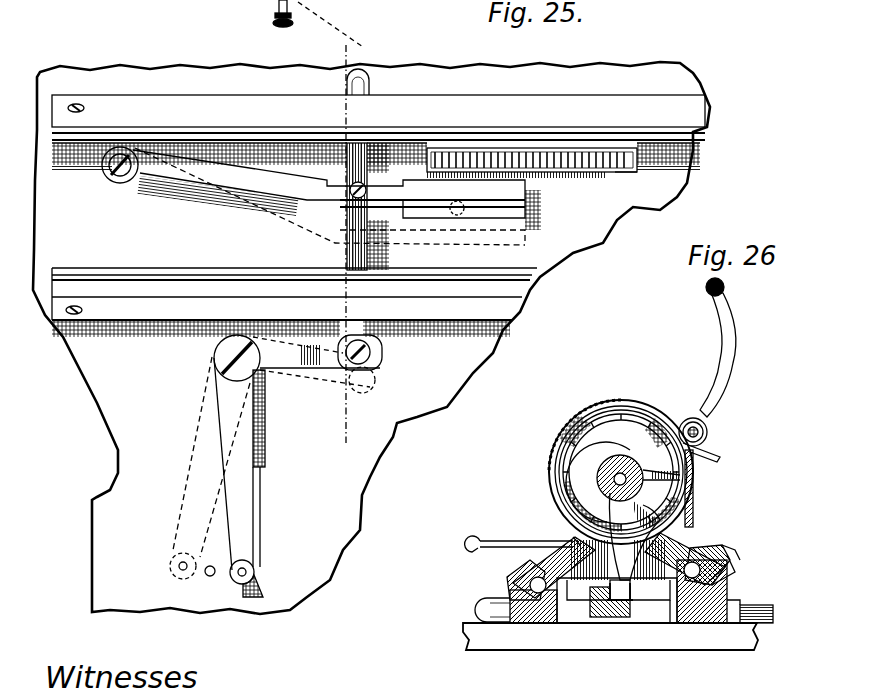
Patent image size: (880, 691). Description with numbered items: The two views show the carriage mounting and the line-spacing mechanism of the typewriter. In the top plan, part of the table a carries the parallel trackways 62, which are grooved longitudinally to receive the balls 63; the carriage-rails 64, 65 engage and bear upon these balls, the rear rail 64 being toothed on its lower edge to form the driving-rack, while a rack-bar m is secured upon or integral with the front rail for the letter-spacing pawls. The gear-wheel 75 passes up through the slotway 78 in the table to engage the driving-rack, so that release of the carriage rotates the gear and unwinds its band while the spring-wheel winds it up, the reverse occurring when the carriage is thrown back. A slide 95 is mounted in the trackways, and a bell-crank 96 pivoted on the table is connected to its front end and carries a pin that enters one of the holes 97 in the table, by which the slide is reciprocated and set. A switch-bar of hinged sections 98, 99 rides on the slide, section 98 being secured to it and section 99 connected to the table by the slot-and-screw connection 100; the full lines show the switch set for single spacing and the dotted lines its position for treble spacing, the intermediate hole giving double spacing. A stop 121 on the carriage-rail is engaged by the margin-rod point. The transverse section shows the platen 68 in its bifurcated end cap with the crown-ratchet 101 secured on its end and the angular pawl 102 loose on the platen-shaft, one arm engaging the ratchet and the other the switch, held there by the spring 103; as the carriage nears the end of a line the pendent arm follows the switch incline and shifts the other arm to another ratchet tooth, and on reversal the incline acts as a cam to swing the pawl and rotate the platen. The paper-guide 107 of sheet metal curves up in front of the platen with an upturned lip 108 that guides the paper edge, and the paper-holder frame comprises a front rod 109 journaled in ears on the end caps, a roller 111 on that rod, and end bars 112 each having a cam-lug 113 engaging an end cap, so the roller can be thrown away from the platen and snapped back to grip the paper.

In FIG. 25, the trackways 62 is at (378, 216).
In FIG. 26, the trackways 62 is at (618, 591).
In FIG. 25, the slide 95 is at (374, 83).
In FIG. 26, the slide 95 is at (480, 610).
In FIG. 25, the bell-crank 96 is at (298, 452).
In FIG. 26, the bell-crank 96 is at (763, 611).
In FIG. 25, the holes 97 is at (216, 479).
In FIG. 25, the switch-bar section 98 is at (440, 212).
In FIG. 26, the switch-bar section 98 is at (600, 618).
In FIG. 25, the switch-bar section 99 is at (178, 190).
In FIG. 25, the slot-and-screw connection 100 is at (100, 175).
In FIG. 25, the gear-wheel 75 is at (600, 172).
In FIG. 25, the slotway 78 is at (631, 188).
In FIG. 25, the table a is at (151, 380).
In FIG. 26, the table a is at (621, 637).
In FIG. 26, the platen 68 is at (627, 403).
In FIG. 26, the crown-ratchet 101 is at (679, 460).
In FIG. 26, the angular pawl 102 is at (660, 476).
In FIG. 26, the spring 103 is at (604, 479).
In FIG. 26, the paper-guide 107 is at (578, 538).
In FIG. 26, the upturned lip 108 is at (544, 530).
In FIG. 26, the front rod 109 is at (702, 432).
In FIG. 26, the roller 111 is at (705, 428).
In FIG. 26, the end bars 112 is at (732, 347).
In FIG. 26, the cam-lug 113 is at (690, 446).
In FIG. 26, the stop 121 is at (723, 546).
In FIG. 26, the rack-bar m is at (716, 560).
In FIG. 26, the balls 63 is at (510, 588).
In FIG. 26, the rear carriage-rail 64 is at (568, 624).
In FIG. 26, the front carriage-rail 65 is at (667, 624).